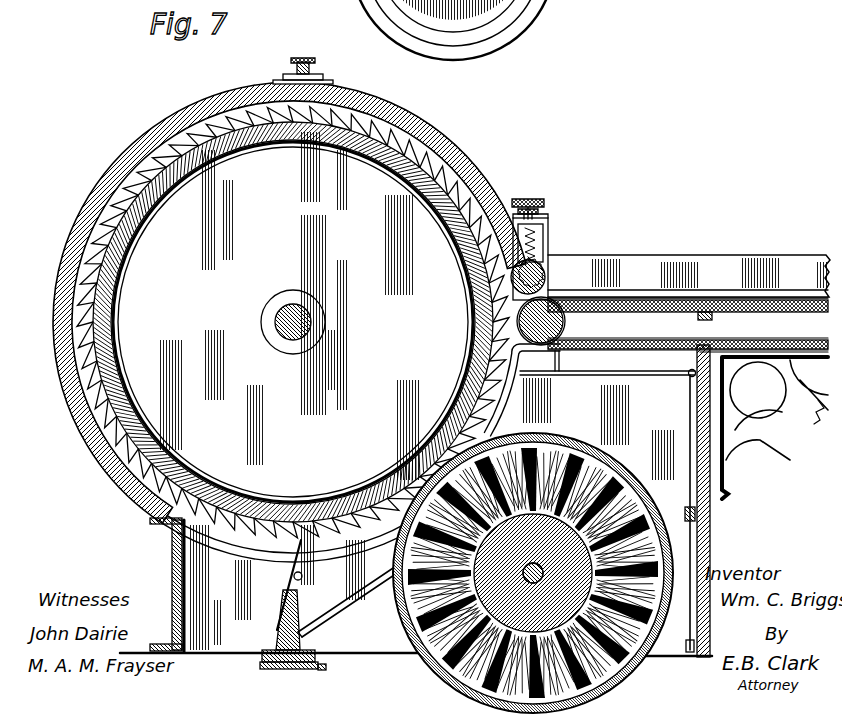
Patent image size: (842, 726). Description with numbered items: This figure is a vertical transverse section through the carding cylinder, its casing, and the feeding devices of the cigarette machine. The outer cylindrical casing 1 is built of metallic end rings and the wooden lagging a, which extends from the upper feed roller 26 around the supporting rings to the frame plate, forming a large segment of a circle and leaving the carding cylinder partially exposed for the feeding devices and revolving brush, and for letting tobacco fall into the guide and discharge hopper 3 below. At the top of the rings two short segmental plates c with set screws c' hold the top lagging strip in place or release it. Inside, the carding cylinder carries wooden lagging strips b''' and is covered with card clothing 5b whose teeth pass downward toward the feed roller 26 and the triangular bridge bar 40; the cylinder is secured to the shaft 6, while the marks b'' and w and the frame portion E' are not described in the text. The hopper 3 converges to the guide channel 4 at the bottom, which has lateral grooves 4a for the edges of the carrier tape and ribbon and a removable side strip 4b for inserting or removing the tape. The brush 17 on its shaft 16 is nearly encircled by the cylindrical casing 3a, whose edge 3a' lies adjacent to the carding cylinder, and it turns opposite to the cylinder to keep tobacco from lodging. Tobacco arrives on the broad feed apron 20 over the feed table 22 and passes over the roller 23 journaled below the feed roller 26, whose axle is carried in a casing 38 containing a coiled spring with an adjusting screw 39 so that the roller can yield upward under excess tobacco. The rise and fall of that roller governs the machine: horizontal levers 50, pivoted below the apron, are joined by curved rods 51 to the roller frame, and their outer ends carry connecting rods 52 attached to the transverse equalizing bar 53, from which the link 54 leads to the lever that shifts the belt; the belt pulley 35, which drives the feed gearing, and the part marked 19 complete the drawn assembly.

The outer cylindrical casing 1 is at (277, 317).
The wooden lagging a is at (385, 108).
The casing rim w is at (262, 90).
The segmental plates c is at (302, 71).
The set screws c' is at (331, 72).
The card clothing 5b is at (226, 162).
The disk section b'' is at (351, 318).
The wooden lagging strips b''' is at (231, 309).
The shaft 6 is at (312, 314).
The bridge bar 40 is at (494, 314).
The adjusting screw 39 is at (528, 197).
The casing 38 is at (549, 230).
The feed roller 26 is at (548, 268).
The feed apron 20 is at (735, 300).
The feed table 22 is at (728, 312).
The roller 23 is at (565, 327).
The curved rods 51 is at (561, 360).
The horizontal levers 50 is at (606, 376).
The cylindrical casing 3a is at (533, 559).
The brush ring edge 3a' is at (644, 688).
The connecting rods 52 is at (690, 390).
The brush 17 is at (362, 564).
The equalizing bar 53 is at (696, 513).
The link 54 is at (690, 642).
The shaft 16 is at (533, 573).
The belt pulley 35 is at (172, 572).
The guide and discharge hopper 3 is at (304, 579).
The link 19 is at (292, 600).
The guide channel 4 is at (288, 645).
The lateral grooves 4a is at (262, 665).
The removable side strip 4b is at (335, 671).
The frame E' is at (474, 506).